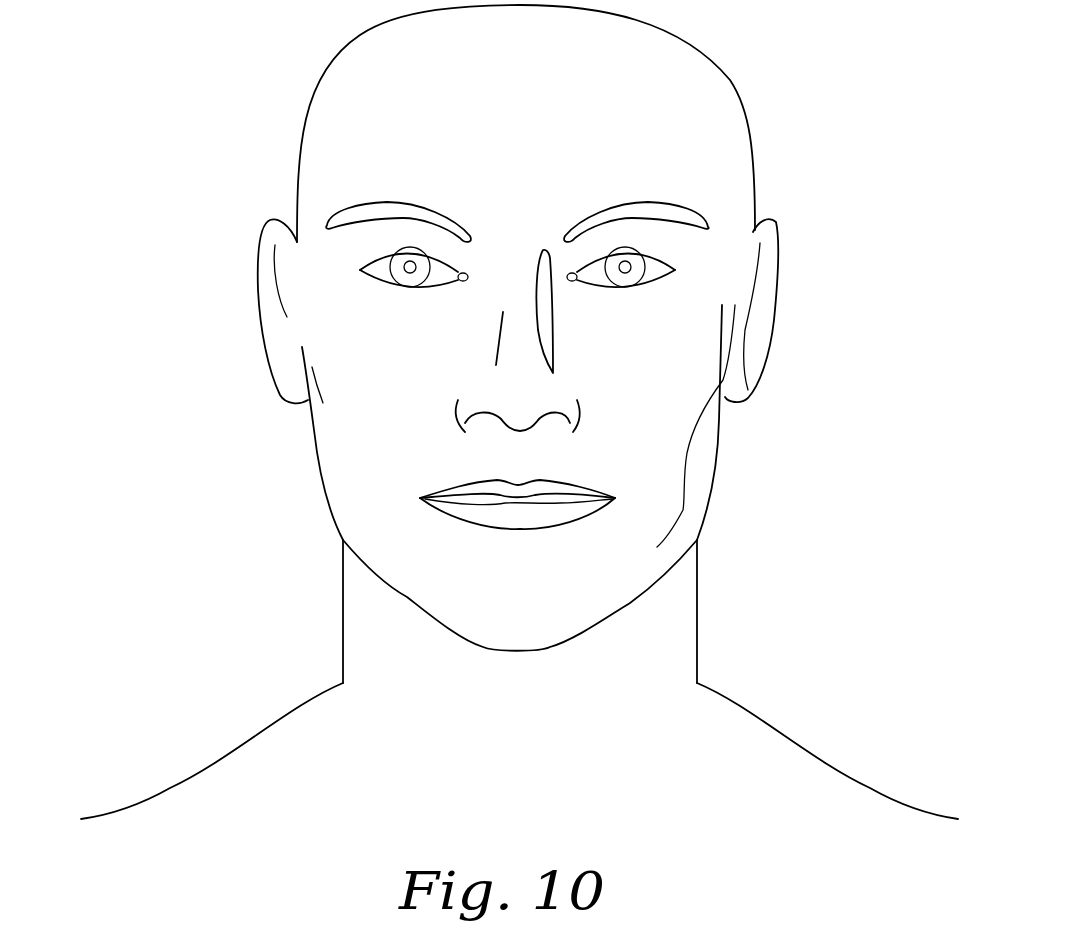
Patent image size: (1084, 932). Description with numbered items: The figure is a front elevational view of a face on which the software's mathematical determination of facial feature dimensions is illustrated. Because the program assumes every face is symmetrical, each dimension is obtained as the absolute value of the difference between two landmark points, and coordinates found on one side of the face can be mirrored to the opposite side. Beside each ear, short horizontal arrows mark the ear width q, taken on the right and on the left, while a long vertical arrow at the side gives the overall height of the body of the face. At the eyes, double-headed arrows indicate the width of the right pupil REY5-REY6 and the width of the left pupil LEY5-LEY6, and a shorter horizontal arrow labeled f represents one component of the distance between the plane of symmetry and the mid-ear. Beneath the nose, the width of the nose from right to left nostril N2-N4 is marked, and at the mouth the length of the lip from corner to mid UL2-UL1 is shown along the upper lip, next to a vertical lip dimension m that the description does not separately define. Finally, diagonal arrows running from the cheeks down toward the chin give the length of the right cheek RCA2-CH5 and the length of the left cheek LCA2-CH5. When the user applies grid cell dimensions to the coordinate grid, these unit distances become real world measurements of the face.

The ear width q is at (293, 193).
The partial distance from symmetric plane toward mid-ear f is at (389, 288).
The width of right pupil REY5-REY6 is at (496, 327).
The width of left pupil LEY5-LEY6 is at (641, 322).
The width of nose N2-N4 is at (474, 442).
The length of lip from corner to mid UL2-UL1 is at (478, 471).
The lip height measurement m is at (635, 480).
The length of right cheek RCA2-CH5 is at (481, 682).
The length of left cheek LCA2-CH5 is at (693, 573).